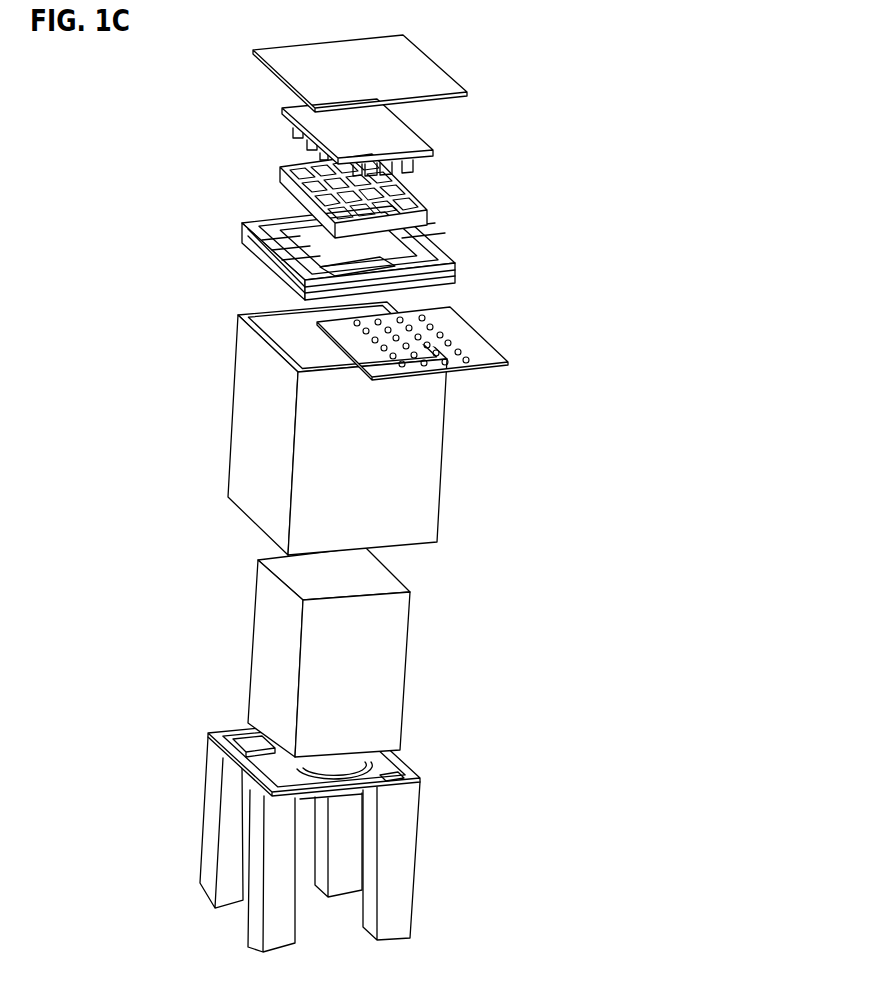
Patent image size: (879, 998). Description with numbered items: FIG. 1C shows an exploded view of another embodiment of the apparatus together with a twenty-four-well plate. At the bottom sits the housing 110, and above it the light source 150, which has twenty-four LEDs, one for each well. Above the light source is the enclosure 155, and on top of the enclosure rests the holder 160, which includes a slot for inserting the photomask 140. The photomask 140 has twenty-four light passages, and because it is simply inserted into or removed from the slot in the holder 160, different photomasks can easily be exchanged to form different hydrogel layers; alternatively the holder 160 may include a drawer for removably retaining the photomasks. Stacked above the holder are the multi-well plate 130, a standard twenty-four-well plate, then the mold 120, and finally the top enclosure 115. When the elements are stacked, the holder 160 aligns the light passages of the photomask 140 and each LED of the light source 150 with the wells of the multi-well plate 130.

The housing 110 is at (407, 843).
The top enclosure 115 is at (417, 65).
The mold 120 is at (370, 132).
The multi-well plate 130 is at (415, 218).
The photomask 140 is at (468, 338).
The light source 150 is at (382, 657).
The enclosure 155 is at (390, 462).
The holder 160 is at (452, 267).